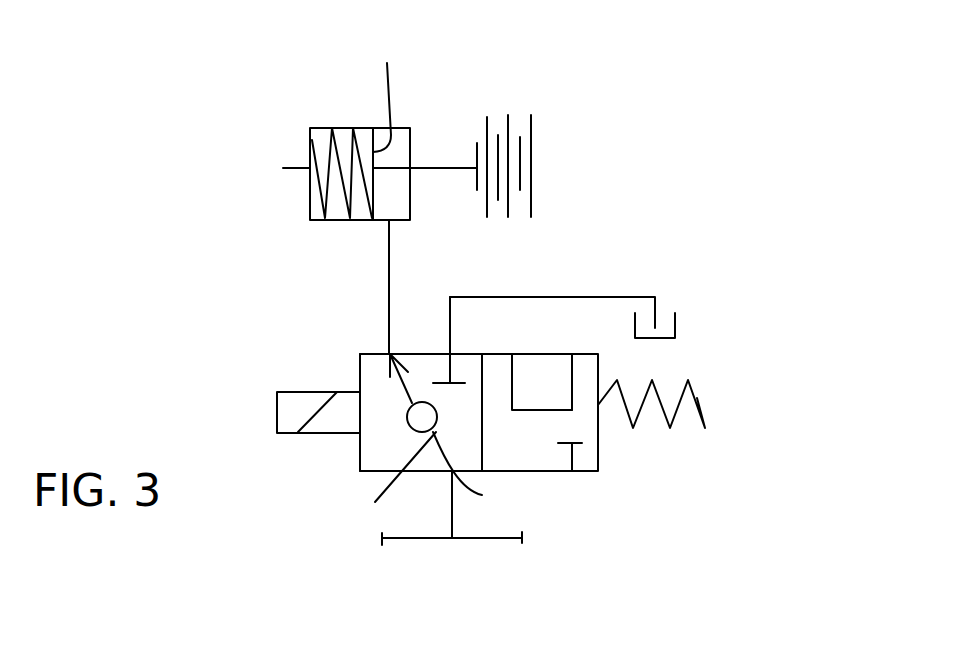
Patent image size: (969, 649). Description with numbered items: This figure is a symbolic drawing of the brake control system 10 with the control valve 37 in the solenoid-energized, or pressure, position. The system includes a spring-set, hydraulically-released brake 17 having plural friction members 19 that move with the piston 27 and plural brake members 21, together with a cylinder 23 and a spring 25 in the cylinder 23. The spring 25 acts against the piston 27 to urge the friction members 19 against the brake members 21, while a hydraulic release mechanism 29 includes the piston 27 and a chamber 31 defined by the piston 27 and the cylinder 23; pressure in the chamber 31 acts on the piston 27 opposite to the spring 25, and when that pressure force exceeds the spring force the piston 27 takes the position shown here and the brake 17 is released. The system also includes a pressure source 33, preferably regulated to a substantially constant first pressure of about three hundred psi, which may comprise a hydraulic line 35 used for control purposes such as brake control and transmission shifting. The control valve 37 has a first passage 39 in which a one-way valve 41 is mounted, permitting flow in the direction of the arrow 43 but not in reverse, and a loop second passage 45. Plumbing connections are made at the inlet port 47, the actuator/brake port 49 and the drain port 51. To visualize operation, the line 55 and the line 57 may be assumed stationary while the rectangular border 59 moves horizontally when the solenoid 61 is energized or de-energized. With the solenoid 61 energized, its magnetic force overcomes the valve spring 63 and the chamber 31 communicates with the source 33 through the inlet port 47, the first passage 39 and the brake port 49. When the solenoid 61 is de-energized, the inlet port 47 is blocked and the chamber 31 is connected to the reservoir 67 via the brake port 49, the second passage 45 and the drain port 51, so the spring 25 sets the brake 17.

The brake control system 10 is at (220, 298).
The brake 17 is at (554, 140).
The friction members 19 is at (477, 143).
The brake members 21 is at (508, 117).
The cylinder 23 is at (342, 127).
The spring 25 is at (360, 165).
The piston 27 is at (374, 95).
The hydraulic release mechanism 29 is at (365, 236).
The chamber 31 is at (397, 215).
The pressure source 33 is at (404, 563).
The hydraulic line 35 is at (490, 540).
The control valve 37 is at (648, 473).
The first passage 39 is at (384, 479).
The one-way valve 41 is at (407, 423).
The arrow 43 is at (390, 380).
The second passage 45 is at (572, 375).
The inlet port 47 is at (479, 472).
The actuator/brake port 49 is at (390, 354).
The drain port 51 is at (450, 354).
The line 55 is at (570, 293).
The line 57 is at (388, 285).
The rectangular border 59 is at (580, 470).
The solenoid 61 is at (277, 412).
The valve spring 63 is at (697, 398).
The reservoir 67 is at (675, 317).